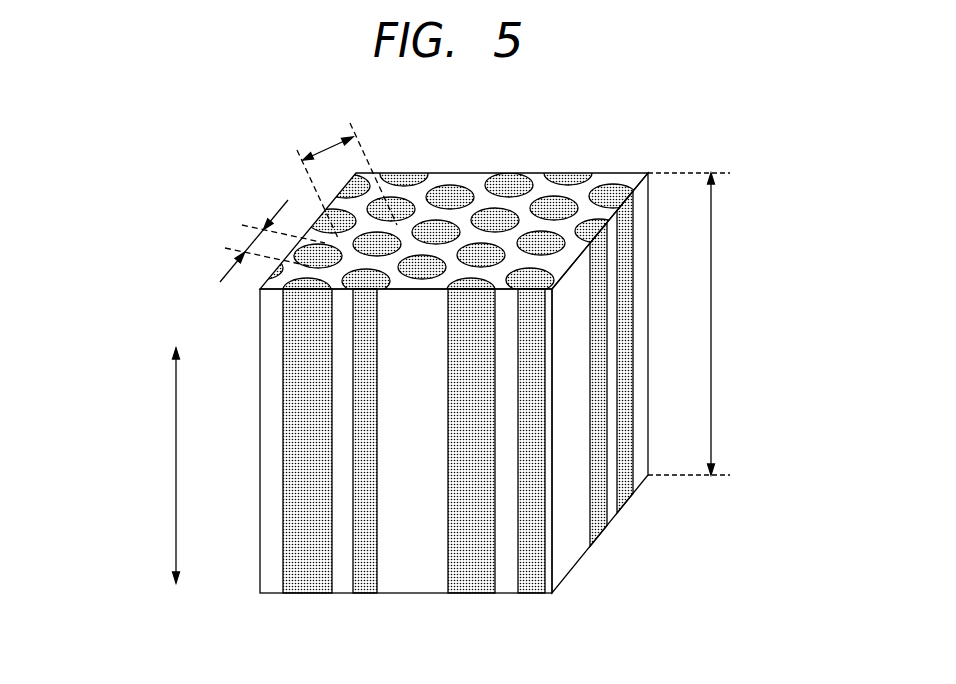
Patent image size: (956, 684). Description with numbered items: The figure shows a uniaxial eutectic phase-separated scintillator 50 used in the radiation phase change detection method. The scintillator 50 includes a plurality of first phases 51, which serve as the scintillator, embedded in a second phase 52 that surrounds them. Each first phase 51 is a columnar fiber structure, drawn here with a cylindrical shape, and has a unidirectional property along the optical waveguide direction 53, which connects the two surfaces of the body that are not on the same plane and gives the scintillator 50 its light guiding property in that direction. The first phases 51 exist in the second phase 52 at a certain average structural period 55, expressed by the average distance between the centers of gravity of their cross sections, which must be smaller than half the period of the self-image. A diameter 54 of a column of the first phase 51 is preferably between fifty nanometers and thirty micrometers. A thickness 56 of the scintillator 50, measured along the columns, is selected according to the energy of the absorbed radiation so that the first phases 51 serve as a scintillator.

The uniaxial eutectic phase-separated scintillator 50 is at (446, 327).
The first phase 51 is at (449, 185).
The second phase 52 is at (518, 202).
The optical waveguide direction 53 is at (176, 437).
The diameter 54 is at (246, 250).
The average structural period 55 is at (327, 147).
The thickness 56 is at (712, 325).